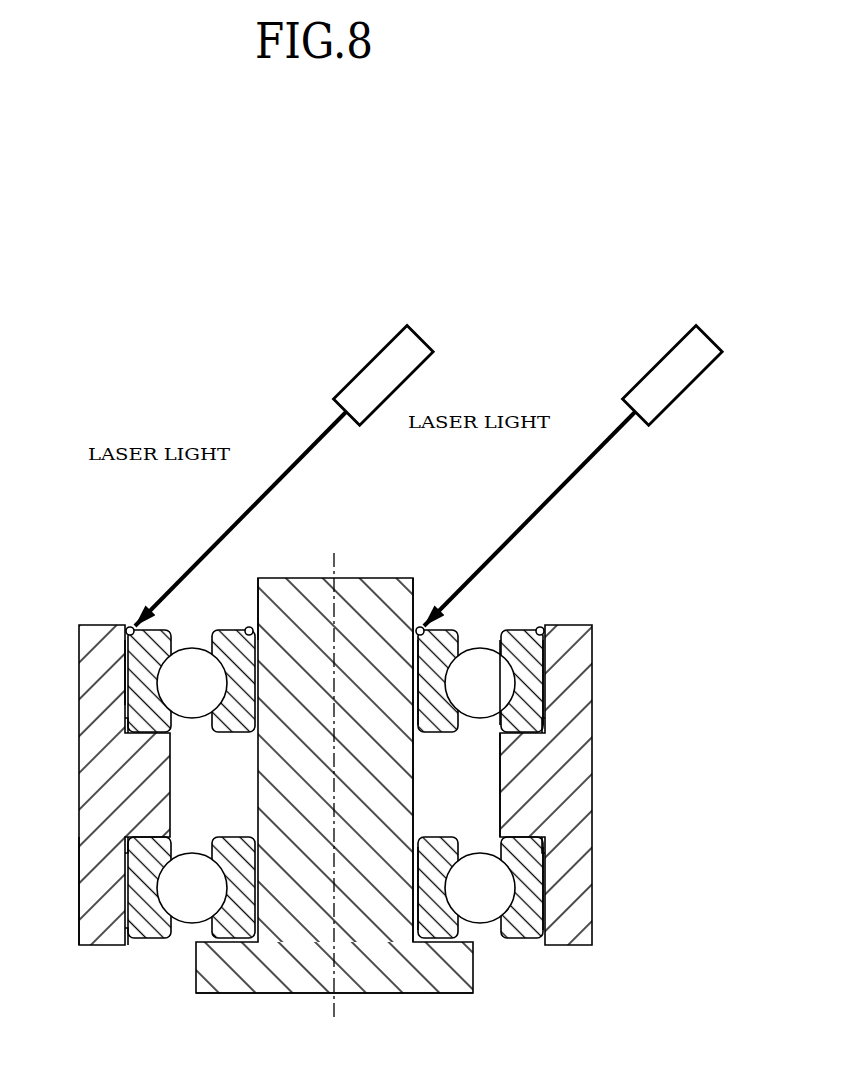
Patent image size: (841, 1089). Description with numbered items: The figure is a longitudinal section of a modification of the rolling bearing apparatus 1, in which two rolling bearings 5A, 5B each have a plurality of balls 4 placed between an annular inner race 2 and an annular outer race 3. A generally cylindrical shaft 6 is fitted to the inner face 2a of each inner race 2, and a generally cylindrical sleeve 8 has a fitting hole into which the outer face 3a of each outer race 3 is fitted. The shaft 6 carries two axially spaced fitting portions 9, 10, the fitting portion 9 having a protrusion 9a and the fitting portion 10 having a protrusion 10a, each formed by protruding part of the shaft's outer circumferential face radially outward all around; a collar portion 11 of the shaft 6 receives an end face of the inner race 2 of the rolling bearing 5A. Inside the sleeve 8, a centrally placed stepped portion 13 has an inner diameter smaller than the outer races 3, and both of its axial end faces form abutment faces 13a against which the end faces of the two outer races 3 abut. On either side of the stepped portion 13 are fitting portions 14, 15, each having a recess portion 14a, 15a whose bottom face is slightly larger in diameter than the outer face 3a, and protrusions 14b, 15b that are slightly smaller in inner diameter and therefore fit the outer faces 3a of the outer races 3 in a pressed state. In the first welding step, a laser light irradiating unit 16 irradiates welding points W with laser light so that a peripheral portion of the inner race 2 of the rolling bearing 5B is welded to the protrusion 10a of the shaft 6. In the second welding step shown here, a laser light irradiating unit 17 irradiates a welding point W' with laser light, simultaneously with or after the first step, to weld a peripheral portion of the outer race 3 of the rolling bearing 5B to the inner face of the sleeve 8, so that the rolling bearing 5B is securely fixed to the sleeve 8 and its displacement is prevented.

The rolling bearing apparatus 1 is at (597, 517).
The inner race 2 is at (446, 734).
The inner face 2a is at (418, 636).
The outer race 3 is at (519, 941).
The outer face 3a is at (548, 645).
The balls 4 is at (191, 718).
The rolling bearing 5A is at (490, 951).
The rolling bearing 5B is at (502, 617).
The shaft 6 is at (418, 626).
The sleeve 8 is at (593, 780).
The fitting portion 9 is at (288, 899).
The protrusion 9a is at (237, 943).
The fitting portion 10 is at (407, 673).
The protrusion 10a is at (246, 639).
The collar portion 11 is at (190, 940).
The stepped portion 13 is at (500, 787).
The abutment faces 13a is at (545, 735).
The fitting portion 14 is at (113, 895).
The recess portion 14a is at (128, 943).
The protrusion 14b is at (137, 840).
The fitting portion 15 is at (118, 683).
The recess portion 15a is at (129, 660).
The protrusion 15b is at (137, 733).
The laser light irradiating unit 16 is at (629, 382).
The laser light irradiating unit 17 is at (346, 380).
The welding point W is at (342, 594).
The welding point W' is at (341, 599).